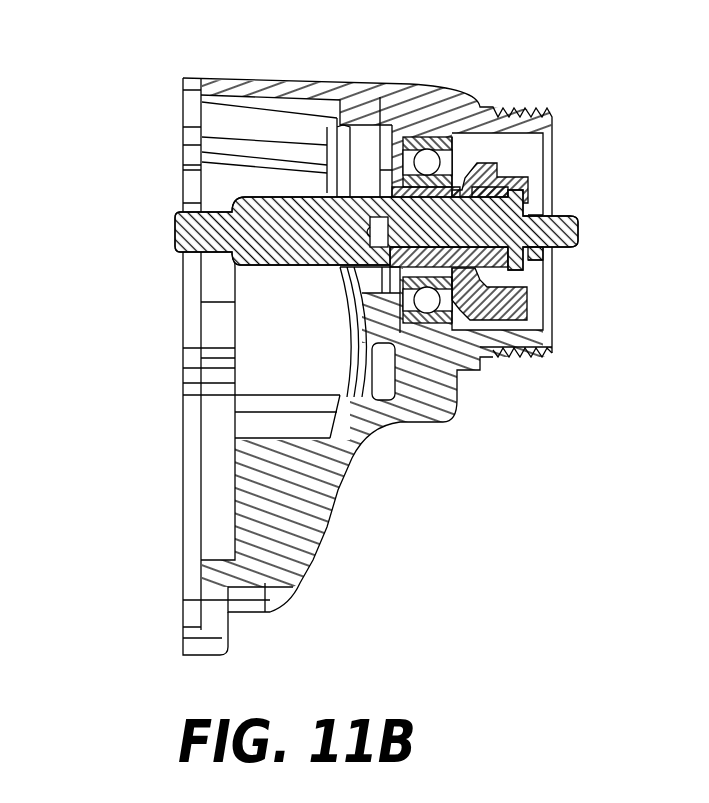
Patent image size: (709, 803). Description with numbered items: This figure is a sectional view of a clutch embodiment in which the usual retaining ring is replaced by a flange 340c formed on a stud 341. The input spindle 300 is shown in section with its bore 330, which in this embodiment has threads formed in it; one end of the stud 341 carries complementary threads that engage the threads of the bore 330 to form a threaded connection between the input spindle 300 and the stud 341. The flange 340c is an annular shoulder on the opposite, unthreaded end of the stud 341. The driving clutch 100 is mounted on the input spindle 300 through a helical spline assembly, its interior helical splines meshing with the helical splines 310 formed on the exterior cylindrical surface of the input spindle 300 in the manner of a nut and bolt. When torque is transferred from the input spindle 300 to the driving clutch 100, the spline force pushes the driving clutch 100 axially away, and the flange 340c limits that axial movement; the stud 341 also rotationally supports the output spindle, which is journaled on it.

The input spindle 300 is at (267, 197).
The bore 330 is at (377, 210).
The helical splines 310 is at (440, 140).
The driving clutch 100 is at (495, 170).
The stud 341 is at (580, 233).
The flange 340c is at (540, 257).